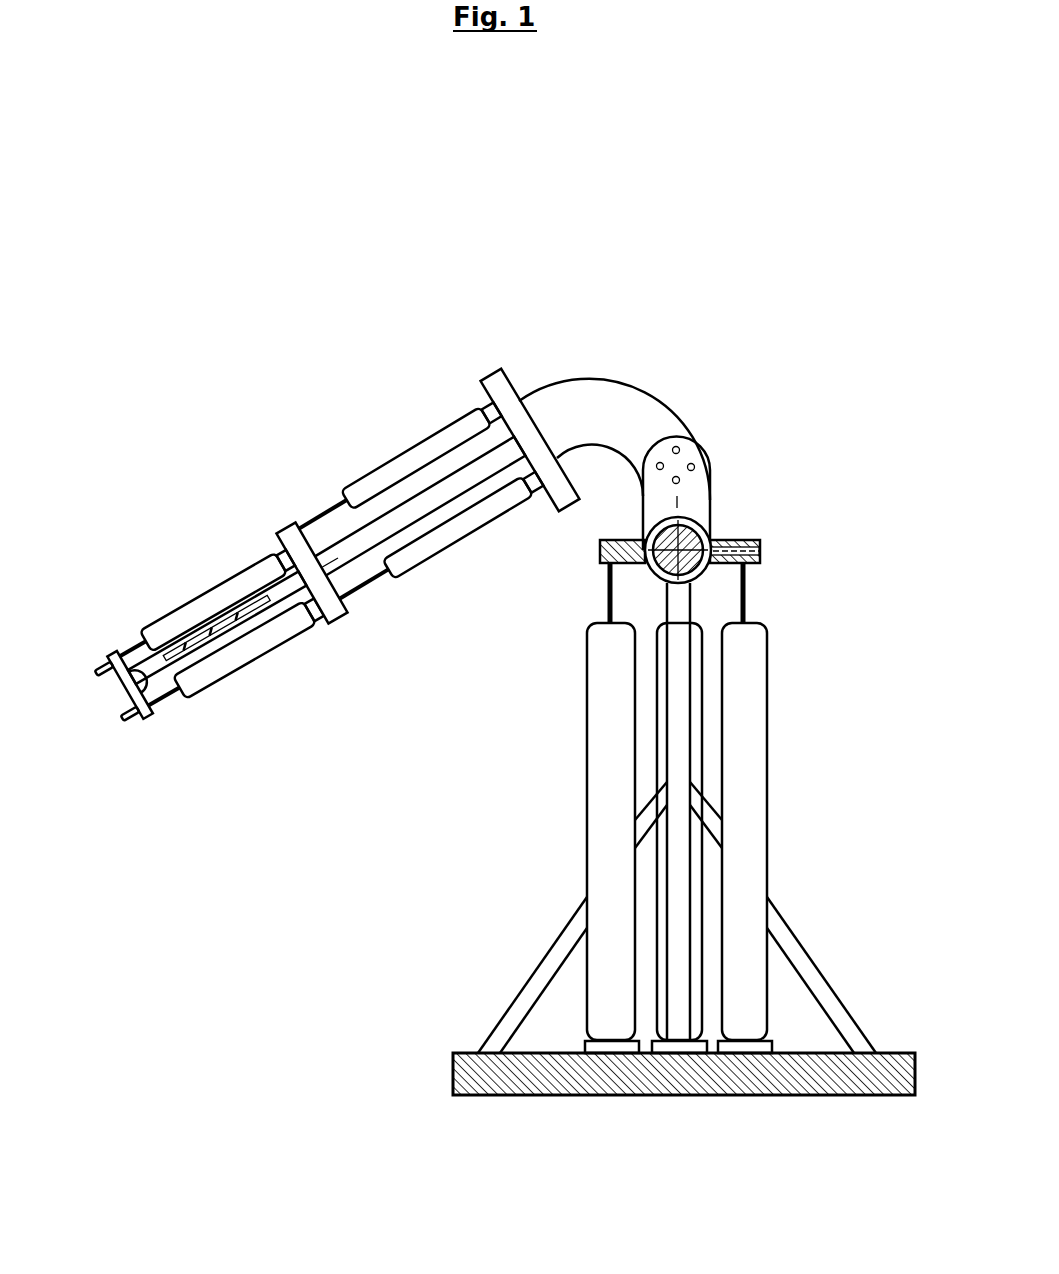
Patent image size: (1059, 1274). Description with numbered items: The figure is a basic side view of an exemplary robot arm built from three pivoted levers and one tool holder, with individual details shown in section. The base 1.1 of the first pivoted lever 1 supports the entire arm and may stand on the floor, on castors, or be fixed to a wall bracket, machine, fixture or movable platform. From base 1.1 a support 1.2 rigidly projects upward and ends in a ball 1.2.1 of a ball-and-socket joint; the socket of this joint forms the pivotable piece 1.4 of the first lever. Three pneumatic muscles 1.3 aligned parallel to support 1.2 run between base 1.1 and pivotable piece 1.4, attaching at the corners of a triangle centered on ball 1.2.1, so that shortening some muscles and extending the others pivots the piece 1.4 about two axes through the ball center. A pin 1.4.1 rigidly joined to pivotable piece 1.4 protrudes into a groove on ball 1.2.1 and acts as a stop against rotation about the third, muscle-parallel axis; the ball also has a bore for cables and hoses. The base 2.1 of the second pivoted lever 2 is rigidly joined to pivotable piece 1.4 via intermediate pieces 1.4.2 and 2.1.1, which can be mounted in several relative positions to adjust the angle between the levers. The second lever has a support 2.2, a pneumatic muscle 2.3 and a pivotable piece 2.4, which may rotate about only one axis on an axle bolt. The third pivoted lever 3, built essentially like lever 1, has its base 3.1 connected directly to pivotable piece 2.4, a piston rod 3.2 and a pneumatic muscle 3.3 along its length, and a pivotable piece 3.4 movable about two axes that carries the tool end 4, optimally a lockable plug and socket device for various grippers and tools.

The first pivoted lever 1 is at (800, 748).
The base 1.1 is at (466, 1053).
The support 1.2 is at (677, 892).
The ball 1.2.1 is at (710, 570).
The pneumatic muscles 1.3 is at (605, 730).
The pivotable piece 1.4 is at (713, 540).
The pin 1.4.1 is at (760, 551).
The intermediate piece 1.4.2 is at (690, 445).
The second pivoted lever 2 is at (385, 435).
The base 2.1 is at (517, 407).
The intermediate piece 2.1.1 is at (612, 405).
The support 2.2 is at (457, 485).
The arm cylinder 2.3 is at (355, 492).
The pivotable piece 2.4 is at (308, 568).
The third pivoted lever 3 is at (212, 577).
The base 3.1 is at (317, 620).
The piston rod 3.2 is at (187, 650).
The arm cylinder 3.3 is at (165, 627).
The pivotable piece 3.4 is at (147, 707).
The tool end 4 is at (128, 717).